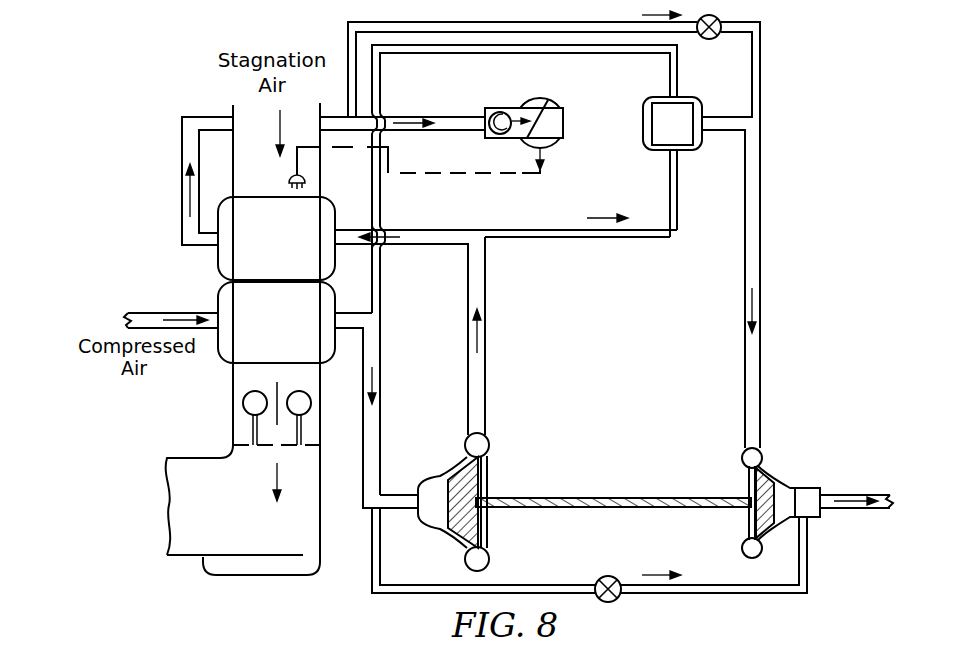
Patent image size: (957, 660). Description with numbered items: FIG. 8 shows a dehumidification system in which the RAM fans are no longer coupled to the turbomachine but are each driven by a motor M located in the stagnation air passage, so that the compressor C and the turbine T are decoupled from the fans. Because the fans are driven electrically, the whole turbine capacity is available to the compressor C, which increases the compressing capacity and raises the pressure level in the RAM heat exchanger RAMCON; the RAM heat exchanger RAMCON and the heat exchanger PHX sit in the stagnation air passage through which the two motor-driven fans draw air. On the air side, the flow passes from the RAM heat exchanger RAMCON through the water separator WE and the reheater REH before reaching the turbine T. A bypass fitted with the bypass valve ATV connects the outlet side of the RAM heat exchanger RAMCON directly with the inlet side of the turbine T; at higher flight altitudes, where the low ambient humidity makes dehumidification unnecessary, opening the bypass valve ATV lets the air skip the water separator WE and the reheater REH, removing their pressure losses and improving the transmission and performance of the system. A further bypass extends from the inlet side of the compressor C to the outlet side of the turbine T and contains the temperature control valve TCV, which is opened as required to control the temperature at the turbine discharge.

The water separator WE is at (523, 126).
The bypass valve ATV is at (711, 41).
The reheater REH is at (672, 123).
The RAM heat exchanger RAMCON is at (276, 238).
The primary heat exchanger PHX is at (276, 322).
The compressor C is at (467, 502).
The turbine T is at (765, 503).
The temperature control valve TCV is at (611, 577).
The motor M is at (243, 404).